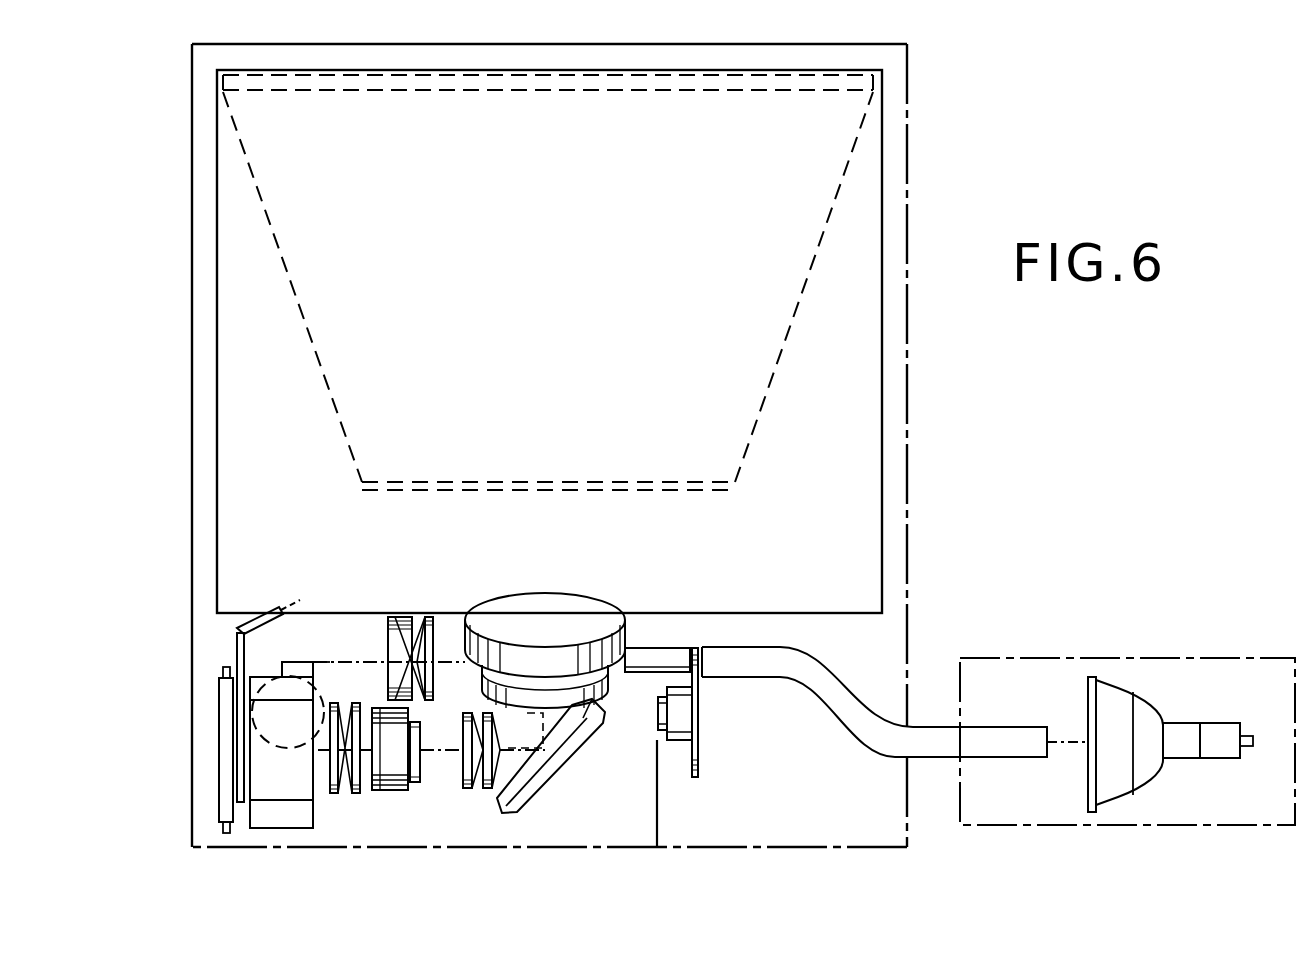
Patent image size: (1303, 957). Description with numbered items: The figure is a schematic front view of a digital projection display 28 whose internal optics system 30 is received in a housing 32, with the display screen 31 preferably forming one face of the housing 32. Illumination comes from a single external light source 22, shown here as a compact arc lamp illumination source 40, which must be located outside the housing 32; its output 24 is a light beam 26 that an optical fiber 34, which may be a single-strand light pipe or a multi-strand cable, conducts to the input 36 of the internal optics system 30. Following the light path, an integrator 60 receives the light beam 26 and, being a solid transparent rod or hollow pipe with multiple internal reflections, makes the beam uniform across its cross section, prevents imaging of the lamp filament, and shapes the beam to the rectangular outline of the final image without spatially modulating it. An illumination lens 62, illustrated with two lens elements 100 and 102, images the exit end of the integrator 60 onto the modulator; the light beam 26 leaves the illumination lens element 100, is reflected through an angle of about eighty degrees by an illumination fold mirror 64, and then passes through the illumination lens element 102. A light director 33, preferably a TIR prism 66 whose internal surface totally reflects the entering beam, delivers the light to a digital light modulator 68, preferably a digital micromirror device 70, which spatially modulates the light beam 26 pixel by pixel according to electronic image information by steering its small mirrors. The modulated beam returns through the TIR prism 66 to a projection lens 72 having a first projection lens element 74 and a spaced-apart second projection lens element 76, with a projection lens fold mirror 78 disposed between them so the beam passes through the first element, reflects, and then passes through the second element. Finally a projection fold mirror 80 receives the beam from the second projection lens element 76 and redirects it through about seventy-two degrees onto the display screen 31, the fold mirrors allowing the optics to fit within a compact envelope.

The external light source 22 is at (1180, 658).
The output 24 is at (1088, 745).
The light beam 26 is at (330, 664).
The digital projection display 28 is at (166, 87).
The internal optics system 30 is at (716, 777).
The display screen 31 is at (217, 198).
The housing 32 is at (192, 312).
The light director 33 is at (259, 836).
The optical fiber 34 is at (922, 718).
The input 36 is at (720, 667).
The compact arc lamp illumination source 40 is at (1150, 775).
The integrator 60 is at (672, 653).
The illumination lens 62 is at (359, 643).
The illumination fold mirror 64 is at (290, 606).
The TIR prism 66 is at (298, 830).
The digital light modulator 68 is at (213, 703).
The digital micromirror device 70 is at (219, 778).
The projection lens 72 is at (531, 815).
The first projection lens element 74 is at (400, 783).
The second projection lens element 76 is at (630, 662).
The projection lens fold mirror 78 is at (573, 748).
The projection fold mirror 80 is at (789, 335).
The illumination lens element 100 is at (410, 618).
The illumination lens element 102 is at (262, 688).